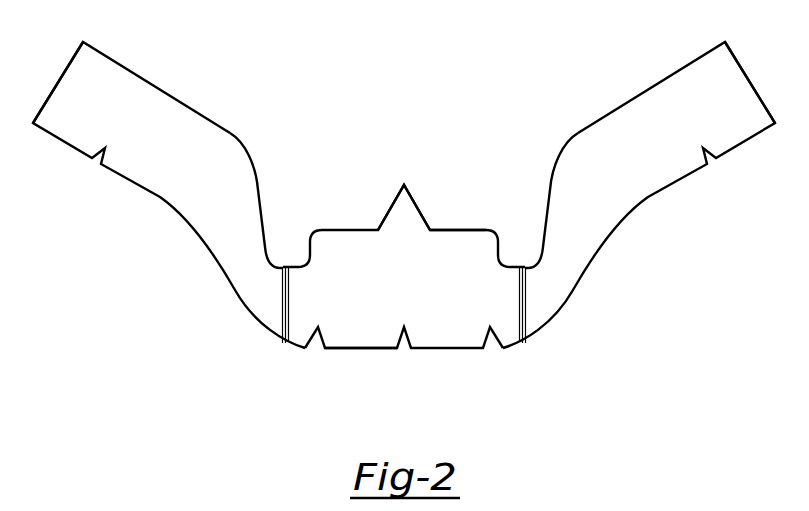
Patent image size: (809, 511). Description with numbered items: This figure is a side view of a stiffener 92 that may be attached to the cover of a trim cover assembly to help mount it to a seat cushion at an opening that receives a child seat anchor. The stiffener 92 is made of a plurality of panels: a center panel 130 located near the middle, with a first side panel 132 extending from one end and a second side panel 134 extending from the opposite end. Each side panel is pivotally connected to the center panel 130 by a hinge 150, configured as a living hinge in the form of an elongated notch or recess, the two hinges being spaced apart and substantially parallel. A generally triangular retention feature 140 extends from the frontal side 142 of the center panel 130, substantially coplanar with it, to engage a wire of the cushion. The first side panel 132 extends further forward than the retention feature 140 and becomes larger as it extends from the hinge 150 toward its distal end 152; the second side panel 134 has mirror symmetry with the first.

The stiffener 92 is at (378, 348).
The center panel 130 is at (392, 290).
The first side panel 132 is at (117, 132).
The second side panel 134 is at (666, 132).
The retention feature 140 is at (404, 185).
The frontal side 142 is at (453, 230).
The hinge 150 is at (282, 307).
The distal end 152 is at (58, 82).